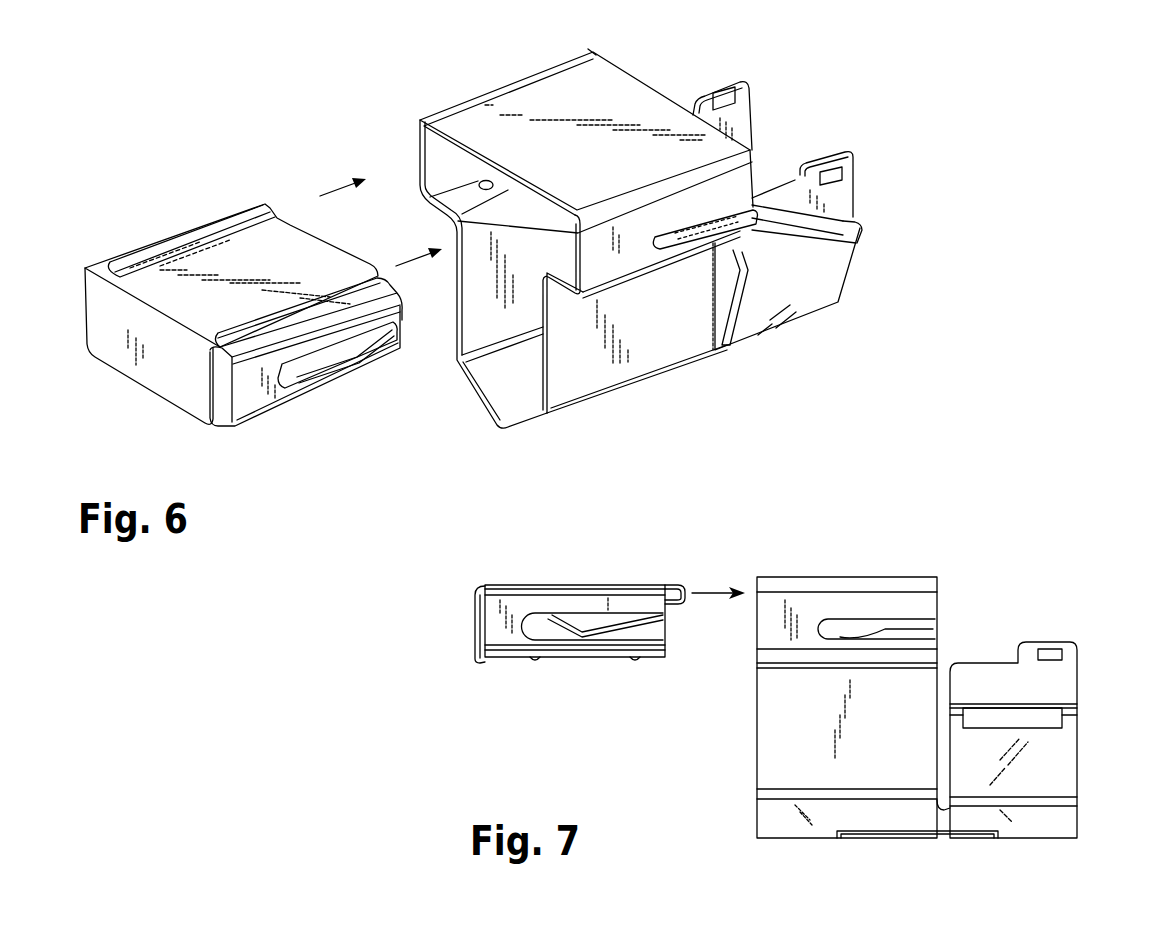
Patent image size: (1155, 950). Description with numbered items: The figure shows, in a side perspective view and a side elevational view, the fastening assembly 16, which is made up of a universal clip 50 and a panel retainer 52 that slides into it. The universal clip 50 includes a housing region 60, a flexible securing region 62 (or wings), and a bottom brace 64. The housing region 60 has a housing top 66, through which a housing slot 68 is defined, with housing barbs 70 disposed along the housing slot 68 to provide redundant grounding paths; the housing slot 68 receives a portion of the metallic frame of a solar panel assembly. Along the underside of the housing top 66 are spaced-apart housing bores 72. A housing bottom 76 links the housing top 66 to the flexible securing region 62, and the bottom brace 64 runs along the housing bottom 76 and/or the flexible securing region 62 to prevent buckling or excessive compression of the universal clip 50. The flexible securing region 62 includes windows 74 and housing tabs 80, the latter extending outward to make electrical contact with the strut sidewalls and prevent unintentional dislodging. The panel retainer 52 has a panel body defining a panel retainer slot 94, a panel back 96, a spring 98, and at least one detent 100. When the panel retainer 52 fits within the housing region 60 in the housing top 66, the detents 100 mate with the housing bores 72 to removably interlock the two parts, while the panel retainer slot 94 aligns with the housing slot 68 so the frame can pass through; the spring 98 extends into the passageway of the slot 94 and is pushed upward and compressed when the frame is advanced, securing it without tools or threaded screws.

In FIG. 6, the fastening assembly 16 is at (254, 130).
In FIG. 7, the fastening assembly 16 is at (1026, 562).
In FIG. 6, the universal clip 50 is at (550, 102).
In FIG. 7, the universal clip 50 is at (865, 680).
In FIG. 6, the panel retainer 52 is at (150, 282).
In FIG. 7, the panel retainer 52 is at (510, 592).
In FIG. 6, the housing region 60 is at (482, 97).
In FIG. 6, the flexible securing region 62 is at (828, 282).
In FIG. 7, the flexible securing region 62 is at (1048, 766).
In FIG. 7, the bottom brace 64 is at (950, 840).
In FIG. 6, the housing top 66 is at (591, 53).
In FIG. 6, the housing slot 68 is at (735, 208).
In FIG. 7, the housing slot 68 is at (941, 618).
In FIG. 6, the housing barbs 70 is at (663, 248).
In FIG. 7, the housing barbs 70 is at (882, 637).
In FIG. 6, the housing bores 72 is at (478, 184).
In FIG. 6, the windows 74 is at (750, 90).
In FIG. 7, the windows 74 is at (1047, 640).
In FIG. 6, the housing bottom 76 is at (590, 363).
In FIG. 6, the housing tabs 80 is at (862, 232).
In FIG. 7, the housing tabs 80 is at (1079, 718).
In FIG. 6, the panel retainer slot 94 is at (403, 322).
In FIG. 7, the panel retainer slot 94 is at (668, 613).
In FIG. 6, the panel back 96 is at (110, 340).
In FIG. 7, the panel back 96 is at (473, 633).
In FIG. 7, the spring 98 is at (672, 587).
In FIG. 7, the detent 100 is at (632, 663).